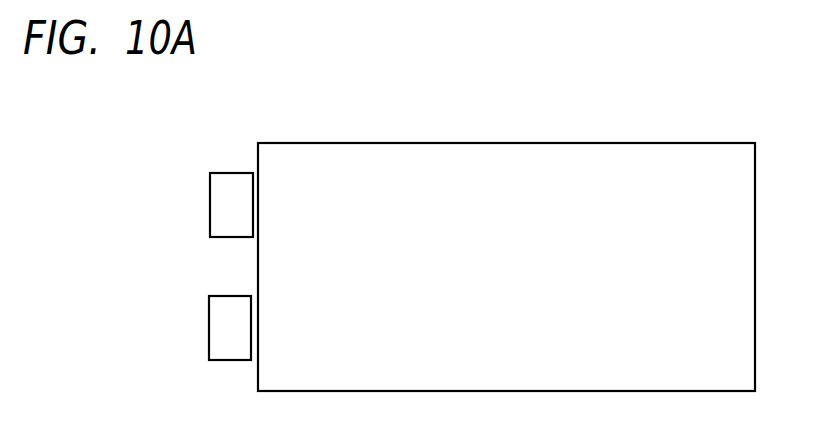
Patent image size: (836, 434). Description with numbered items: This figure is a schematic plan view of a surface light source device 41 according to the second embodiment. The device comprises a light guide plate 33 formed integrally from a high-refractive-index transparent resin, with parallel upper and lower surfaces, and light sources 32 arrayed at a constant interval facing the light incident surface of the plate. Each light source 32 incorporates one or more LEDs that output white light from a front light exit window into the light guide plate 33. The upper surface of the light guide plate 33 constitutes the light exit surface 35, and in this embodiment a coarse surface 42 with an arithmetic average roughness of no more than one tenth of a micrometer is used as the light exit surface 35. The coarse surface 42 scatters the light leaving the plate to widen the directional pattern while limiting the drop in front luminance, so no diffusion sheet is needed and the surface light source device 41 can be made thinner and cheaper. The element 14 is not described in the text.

The surface light source device 41 is at (712, 73).
The current collector 14 is at (257, 265).
The light source 32 is at (219, 201).
The coarse surface 42 is at (457, 208).
The light guide plate 33 is at (566, 240).
The light exit surface 35 is at (571, 172).